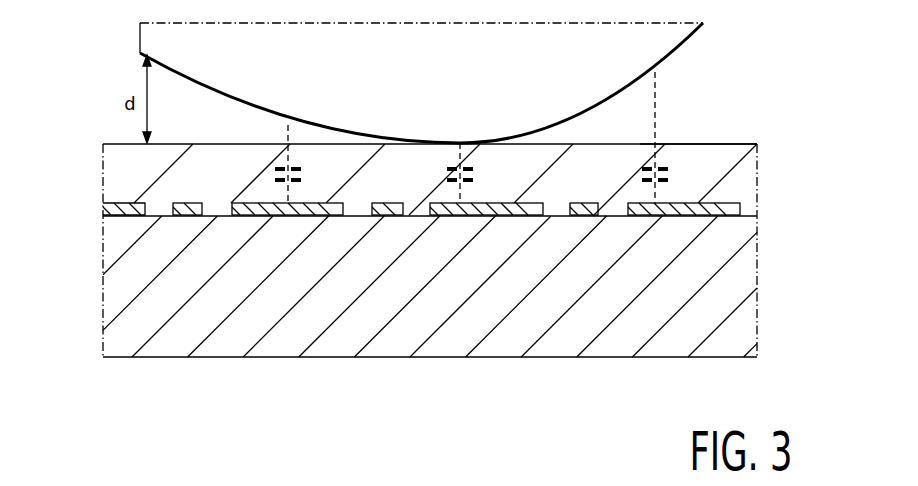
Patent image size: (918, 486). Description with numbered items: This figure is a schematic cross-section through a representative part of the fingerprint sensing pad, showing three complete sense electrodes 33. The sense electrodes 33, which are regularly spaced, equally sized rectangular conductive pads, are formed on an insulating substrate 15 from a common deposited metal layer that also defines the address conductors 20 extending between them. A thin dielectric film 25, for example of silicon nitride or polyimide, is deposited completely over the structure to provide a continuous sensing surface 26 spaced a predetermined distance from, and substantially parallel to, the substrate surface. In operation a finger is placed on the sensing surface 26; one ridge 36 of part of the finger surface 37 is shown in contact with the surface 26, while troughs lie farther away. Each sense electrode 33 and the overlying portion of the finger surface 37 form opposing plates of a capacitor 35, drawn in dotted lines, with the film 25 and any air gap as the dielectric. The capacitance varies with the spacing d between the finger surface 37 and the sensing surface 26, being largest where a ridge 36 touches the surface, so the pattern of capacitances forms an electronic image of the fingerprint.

The insulating substrate 15 is at (673, 317).
The address conductors 20 is at (188, 212).
The dielectric film 25 is at (120, 170).
The sensing surface 26 is at (717, 143).
The sense electrodes 33 is at (736, 209).
The capacitor 35 is at (292, 163).
The ridge 36 is at (583, 113).
The finger surface 37 is at (697, 49).